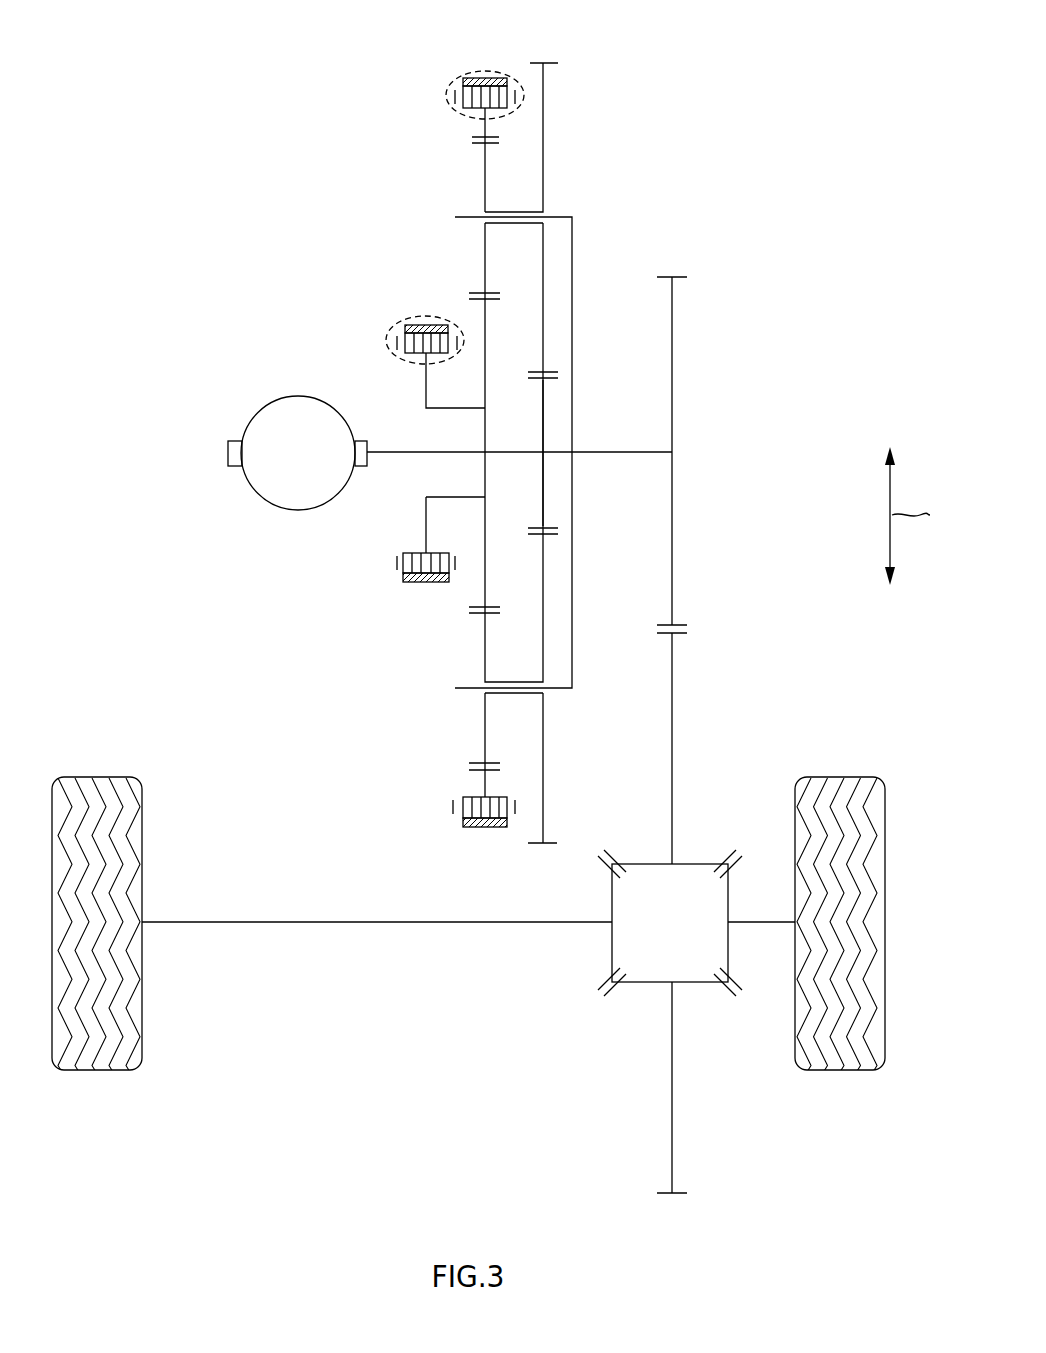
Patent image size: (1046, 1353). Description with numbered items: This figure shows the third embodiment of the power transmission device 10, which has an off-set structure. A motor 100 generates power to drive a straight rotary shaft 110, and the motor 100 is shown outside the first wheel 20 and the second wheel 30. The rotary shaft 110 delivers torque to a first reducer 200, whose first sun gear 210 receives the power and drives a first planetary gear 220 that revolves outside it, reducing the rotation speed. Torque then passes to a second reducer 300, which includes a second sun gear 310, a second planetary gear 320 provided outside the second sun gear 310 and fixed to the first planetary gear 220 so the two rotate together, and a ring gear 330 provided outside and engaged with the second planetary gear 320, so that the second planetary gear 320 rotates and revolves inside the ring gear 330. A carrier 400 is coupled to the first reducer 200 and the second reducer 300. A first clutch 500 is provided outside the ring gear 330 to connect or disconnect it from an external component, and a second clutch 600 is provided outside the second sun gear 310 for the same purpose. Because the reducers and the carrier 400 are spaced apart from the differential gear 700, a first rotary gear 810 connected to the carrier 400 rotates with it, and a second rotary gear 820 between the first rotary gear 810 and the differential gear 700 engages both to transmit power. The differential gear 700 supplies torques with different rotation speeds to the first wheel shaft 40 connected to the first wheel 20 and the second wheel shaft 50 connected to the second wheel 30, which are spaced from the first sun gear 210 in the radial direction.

The power transmission device 10 is at (124, 63).
The first wheel 20 is at (96, 776).
The second wheel 30 is at (838, 776).
The first wheel shaft 40 is at (177, 925).
The second wheel shaft 50 is at (765, 925).
The motor 100 is at (293, 382).
The rotary shaft 110 is at (383, 456).
The first reducer 200 is at (553, 305).
The first sun gear 210 is at (546, 418).
The first planetary gear 220 is at (548, 128).
The second reducer 300 is at (455, 276).
The second sun gear 310 is at (483, 315).
The second planetary gear 320 is at (483, 183).
The ring gear 330 is at (482, 129).
The carrier 400 is at (574, 231).
The first clutch 500 is at (485, 72).
The second clutch 600 is at (394, 328).
The differential gear 700 is at (700, 863).
The first rotary gear 810 is at (675, 533).
The second rotary gear 820 is at (675, 677).